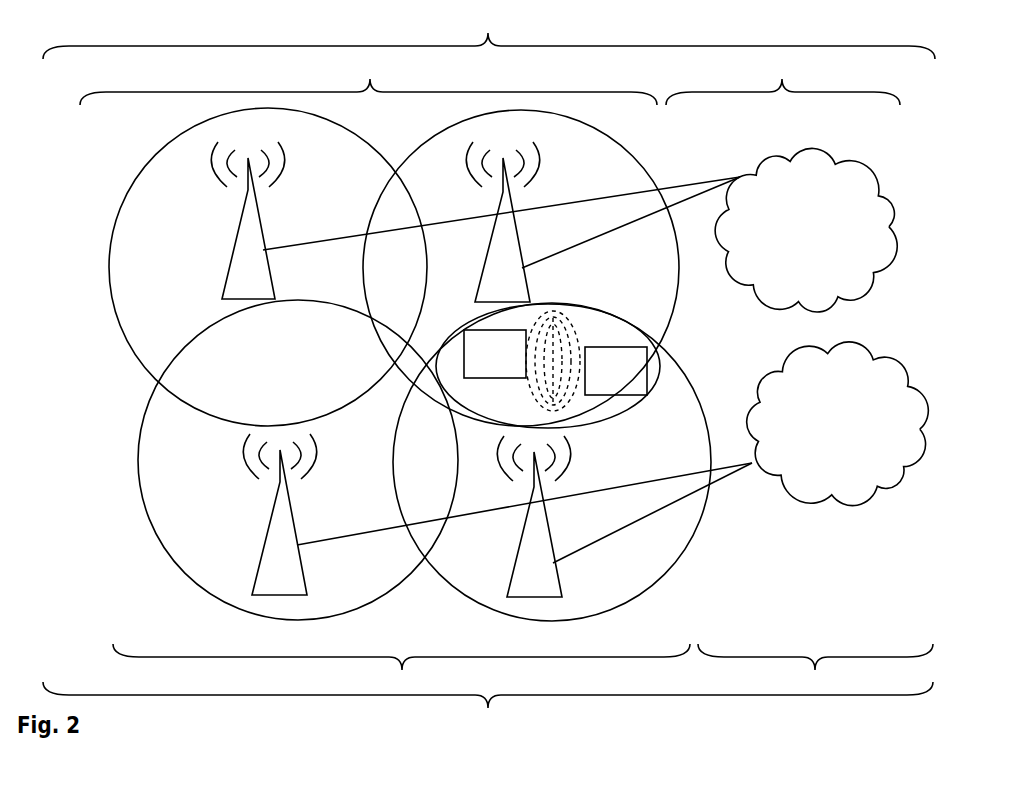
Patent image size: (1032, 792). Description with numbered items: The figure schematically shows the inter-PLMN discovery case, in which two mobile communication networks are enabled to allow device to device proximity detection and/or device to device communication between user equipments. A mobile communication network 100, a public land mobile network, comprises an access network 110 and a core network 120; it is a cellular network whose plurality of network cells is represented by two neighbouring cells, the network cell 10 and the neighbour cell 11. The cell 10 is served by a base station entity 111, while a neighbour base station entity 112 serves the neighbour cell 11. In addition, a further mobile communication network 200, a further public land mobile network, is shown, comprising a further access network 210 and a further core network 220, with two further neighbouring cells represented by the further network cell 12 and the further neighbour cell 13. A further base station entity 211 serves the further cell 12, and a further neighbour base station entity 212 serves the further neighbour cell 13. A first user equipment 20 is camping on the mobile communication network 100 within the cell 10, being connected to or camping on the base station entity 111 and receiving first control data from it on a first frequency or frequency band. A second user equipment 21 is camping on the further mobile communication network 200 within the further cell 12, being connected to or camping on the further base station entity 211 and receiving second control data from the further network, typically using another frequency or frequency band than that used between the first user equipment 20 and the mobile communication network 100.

The mobile communication network 100 is at (489, 31).
The access network 110 is at (368, 79).
The core network 120 is at (783, 79).
The further mobile communication network 200 is at (488, 706).
The further access network 210 is at (401, 669).
The further core network 220 is at (815, 669).
The network cell 10 is at (665, 332).
The neighbour cell 11 is at (140, 362).
The further network cell 12 is at (458, 591).
The further neighbour cell 13 is at (207, 592).
The base station entity 111 is at (502, 222).
The neighbour base station entity 112 is at (247, 221).
The further base station entity 211 is at (533, 516).
The further neighbour base station entity 212 is at (279, 514).
The first user equipment 20 is at (495, 354).
The second user equipment 21 is at (616, 371).